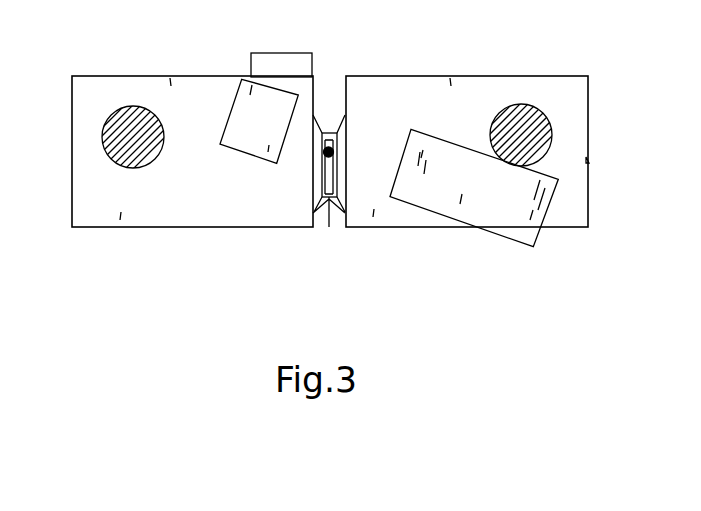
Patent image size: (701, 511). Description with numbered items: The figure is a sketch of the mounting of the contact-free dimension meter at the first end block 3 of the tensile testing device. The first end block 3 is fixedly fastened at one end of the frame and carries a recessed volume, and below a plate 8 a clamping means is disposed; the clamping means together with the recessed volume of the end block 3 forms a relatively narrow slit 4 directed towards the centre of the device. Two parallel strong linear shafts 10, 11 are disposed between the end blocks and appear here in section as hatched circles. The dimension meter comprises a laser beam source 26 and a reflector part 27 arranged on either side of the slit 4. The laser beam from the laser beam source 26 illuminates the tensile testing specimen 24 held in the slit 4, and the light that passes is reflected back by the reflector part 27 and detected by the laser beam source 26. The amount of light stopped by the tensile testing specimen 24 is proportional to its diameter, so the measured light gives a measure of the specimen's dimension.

The first end block 3 is at (178, 203).
The slit 4 is at (331, 183).
The plate 8 is at (273, 63).
The linear shaft 10 is at (138, 118).
The linear shaft 11 is at (515, 130).
The tensile testing specimen 24 is at (327, 138).
The laser beam source 26 is at (490, 200).
The reflector part 27 is at (243, 120).